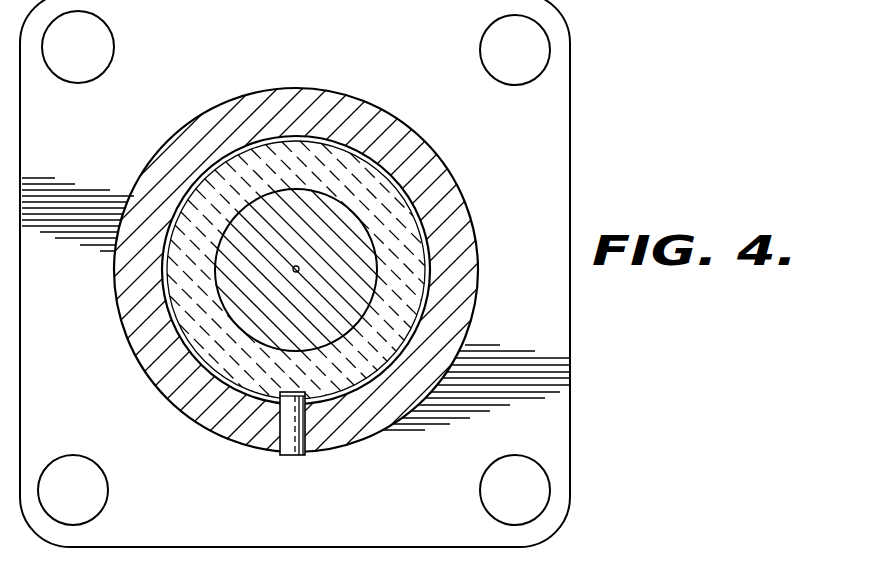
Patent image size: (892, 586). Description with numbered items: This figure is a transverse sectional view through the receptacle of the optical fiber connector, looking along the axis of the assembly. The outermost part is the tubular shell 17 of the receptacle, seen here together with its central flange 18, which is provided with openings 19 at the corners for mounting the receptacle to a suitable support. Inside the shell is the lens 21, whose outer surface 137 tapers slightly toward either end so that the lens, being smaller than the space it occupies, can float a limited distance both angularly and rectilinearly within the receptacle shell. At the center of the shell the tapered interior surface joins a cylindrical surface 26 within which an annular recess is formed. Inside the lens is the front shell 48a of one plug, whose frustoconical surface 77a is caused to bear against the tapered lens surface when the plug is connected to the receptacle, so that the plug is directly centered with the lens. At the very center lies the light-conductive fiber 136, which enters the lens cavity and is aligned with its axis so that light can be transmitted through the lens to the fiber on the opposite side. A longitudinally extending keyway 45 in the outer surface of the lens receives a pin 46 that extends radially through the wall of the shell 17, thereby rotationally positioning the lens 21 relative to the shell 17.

The tubular shell 17 is at (573, 156).
The central flange 18 is at (570, 108).
The openings 19 is at (110, 47).
The lens 21 is at (420, 325).
The outer surface 137 is at (422, 287).
The cylindrical surface 26 is at (422, 242).
The front shell 48a is at (222, 305).
The frustoconical surface 77a is at (285, 352).
The light-conductive fiber 136 is at (296, 266).
The keyway 45 is at (300, 392).
The pin 46 is at (290, 456).